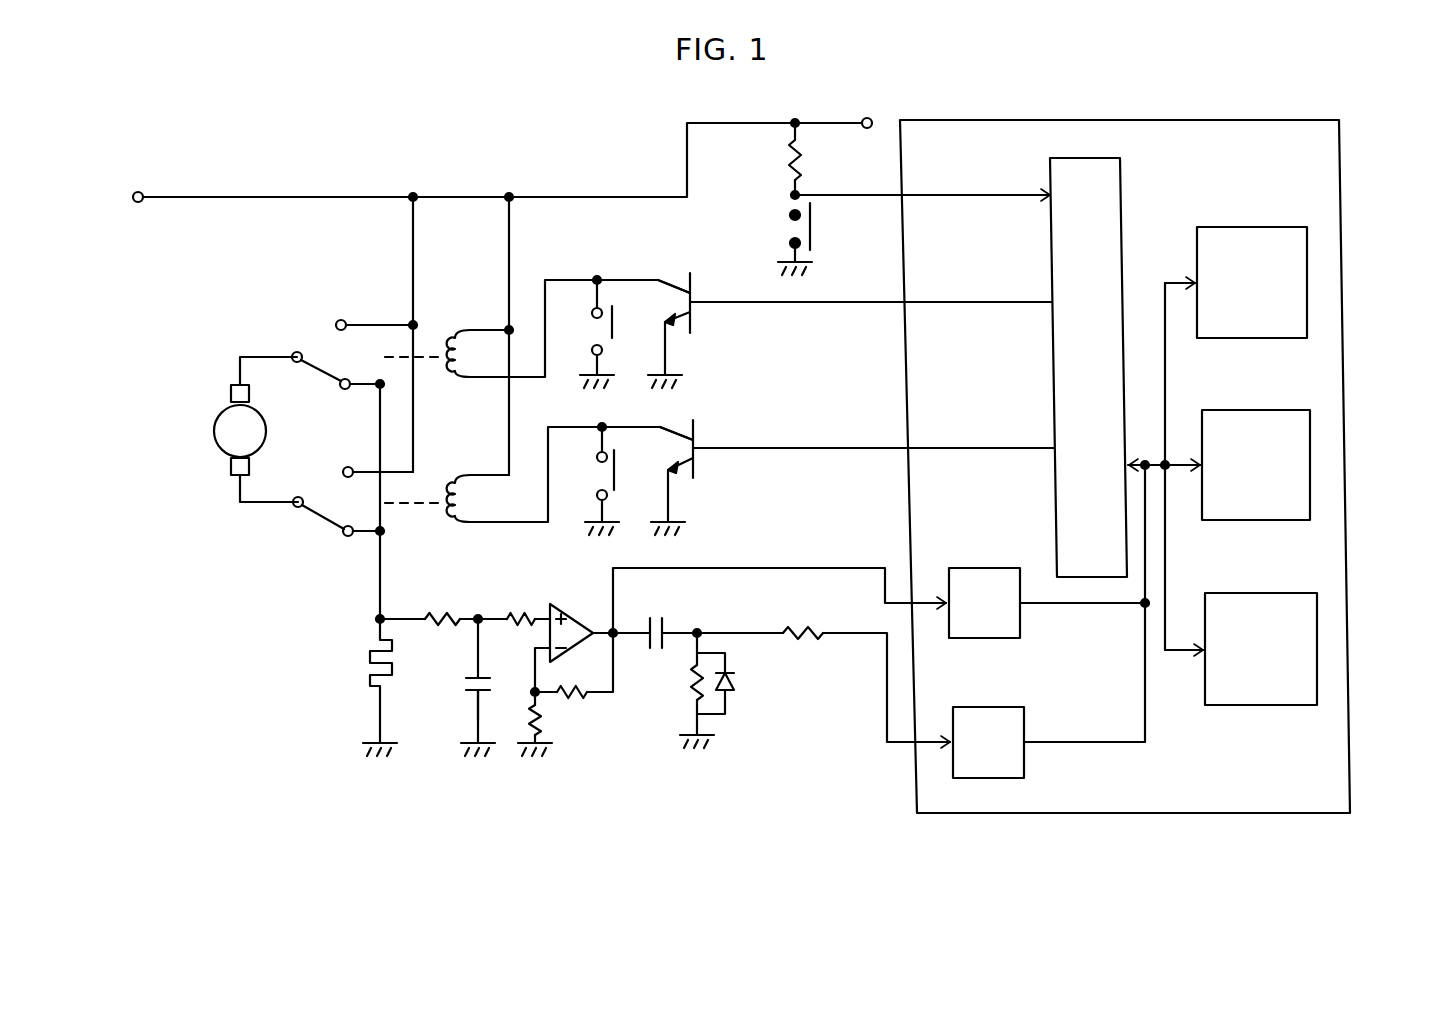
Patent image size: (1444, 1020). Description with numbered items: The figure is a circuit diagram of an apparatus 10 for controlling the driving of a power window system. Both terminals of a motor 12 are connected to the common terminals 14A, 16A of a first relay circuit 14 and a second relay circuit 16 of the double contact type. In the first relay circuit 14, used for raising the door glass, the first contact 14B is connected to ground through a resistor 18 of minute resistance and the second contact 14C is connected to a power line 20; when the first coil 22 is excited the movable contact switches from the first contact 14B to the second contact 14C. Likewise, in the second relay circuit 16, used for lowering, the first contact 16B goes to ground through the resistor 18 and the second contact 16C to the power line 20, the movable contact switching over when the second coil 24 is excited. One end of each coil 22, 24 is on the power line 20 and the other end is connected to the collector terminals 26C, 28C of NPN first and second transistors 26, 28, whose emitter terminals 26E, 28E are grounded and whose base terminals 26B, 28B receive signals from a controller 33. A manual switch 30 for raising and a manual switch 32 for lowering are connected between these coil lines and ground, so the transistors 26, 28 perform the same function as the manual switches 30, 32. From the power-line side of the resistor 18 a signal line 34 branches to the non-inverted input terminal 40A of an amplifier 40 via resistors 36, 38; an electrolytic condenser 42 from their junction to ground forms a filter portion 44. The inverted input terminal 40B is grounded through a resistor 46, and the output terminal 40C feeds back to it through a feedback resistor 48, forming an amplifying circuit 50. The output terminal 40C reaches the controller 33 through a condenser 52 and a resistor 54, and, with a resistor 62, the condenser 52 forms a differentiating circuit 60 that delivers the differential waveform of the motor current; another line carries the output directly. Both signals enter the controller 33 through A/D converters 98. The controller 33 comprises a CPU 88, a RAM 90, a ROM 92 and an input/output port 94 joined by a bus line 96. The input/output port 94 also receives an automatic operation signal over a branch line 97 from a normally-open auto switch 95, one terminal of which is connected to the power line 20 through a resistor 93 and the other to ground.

The control system 10 is at (1370, 305).
The motor 12 is at (214, 437).
The first relay circuit 14 is at (330, 344).
The common terminal 14A is at (294, 354).
The first contact 14B is at (345, 390).
The second contact 14C is at (338, 319).
The second relay circuit 16 is at (325, 520).
The common terminal 16A is at (298, 508).
The first contact 16B is at (344, 539).
The second contact 16C is at (345, 467).
The resistor 18 is at (372, 657).
The power line 20 is at (347, 196).
The first coil 22 is at (477, 352).
The second coil 24 is at (482, 491).
The first transistor 26 is at (824, 306).
The base terminal 26B is at (700, 305).
The collector terminal 26C is at (668, 279).
The emitter terminal 26E is at (678, 318).
The second transistor 28 is at (828, 460).
The base terminal 28B is at (700, 458).
The collector terminal 28C is at (688, 438).
The emitter terminal 28E is at (690, 468).
The manual switch for the raising operation 30 is at (616, 330).
The manual switch for the lowering operation 32 is at (622, 487).
The controller 33 is at (1345, 192).
The signal line 34 is at (417, 622).
The resistor 36 is at (428, 614).
The resistor 38 is at (507, 615).
The amplifier 40 is at (570, 681).
The non-inverted input terminal 40A is at (547, 607).
The inverted input terminal 40B is at (540, 645).
The output terminal 40C is at (598, 642).
The electrolytic condenser 42 is at (470, 679).
The filter portion 44 is at (470, 709).
The resistor 46 is at (538, 718).
The feedback resistor 48 is at (600, 694).
The amplifying circuit 50 is at (596, 742).
The condenser 52 is at (662, 613).
The resistor 54 is at (805, 653).
The differentiating circuit 60 is at (742, 625).
The resistor 62 is at (690, 683).
The CPU 88 is at (1255, 410).
The RAM 90 is at (1250, 227).
The ROM 92 is at (1257, 593).
The resistor 93 is at (806, 154).
The input/output port 94 is at (1122, 188).
The auto switch 95 is at (812, 204).
The bus line 96 is at (1171, 641).
The branch line 97 is at (893, 195).
The A/D converters 98 is at (955, 640).